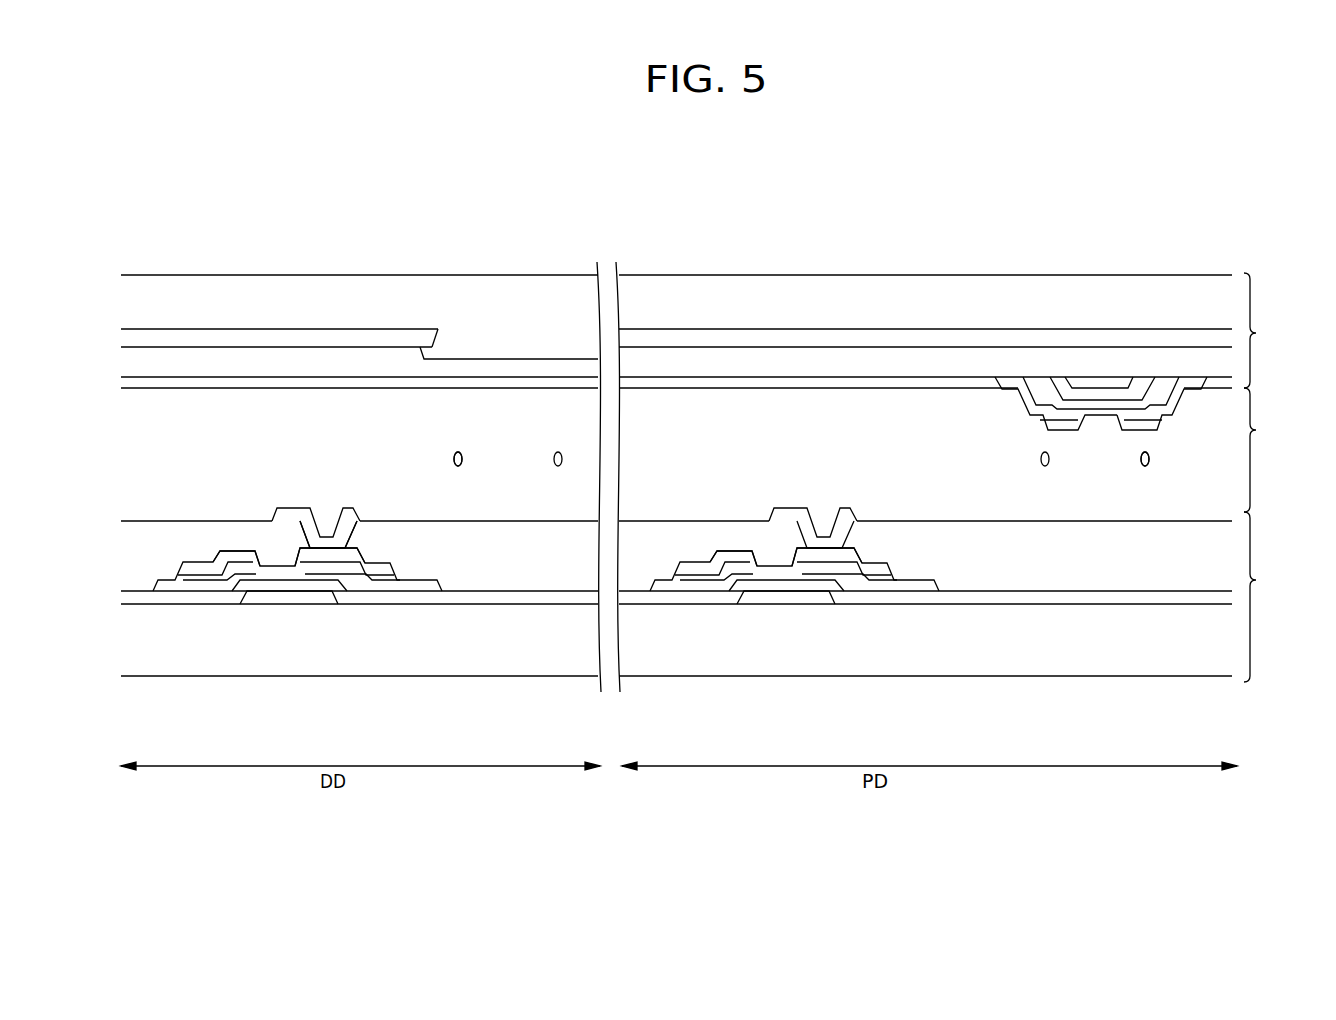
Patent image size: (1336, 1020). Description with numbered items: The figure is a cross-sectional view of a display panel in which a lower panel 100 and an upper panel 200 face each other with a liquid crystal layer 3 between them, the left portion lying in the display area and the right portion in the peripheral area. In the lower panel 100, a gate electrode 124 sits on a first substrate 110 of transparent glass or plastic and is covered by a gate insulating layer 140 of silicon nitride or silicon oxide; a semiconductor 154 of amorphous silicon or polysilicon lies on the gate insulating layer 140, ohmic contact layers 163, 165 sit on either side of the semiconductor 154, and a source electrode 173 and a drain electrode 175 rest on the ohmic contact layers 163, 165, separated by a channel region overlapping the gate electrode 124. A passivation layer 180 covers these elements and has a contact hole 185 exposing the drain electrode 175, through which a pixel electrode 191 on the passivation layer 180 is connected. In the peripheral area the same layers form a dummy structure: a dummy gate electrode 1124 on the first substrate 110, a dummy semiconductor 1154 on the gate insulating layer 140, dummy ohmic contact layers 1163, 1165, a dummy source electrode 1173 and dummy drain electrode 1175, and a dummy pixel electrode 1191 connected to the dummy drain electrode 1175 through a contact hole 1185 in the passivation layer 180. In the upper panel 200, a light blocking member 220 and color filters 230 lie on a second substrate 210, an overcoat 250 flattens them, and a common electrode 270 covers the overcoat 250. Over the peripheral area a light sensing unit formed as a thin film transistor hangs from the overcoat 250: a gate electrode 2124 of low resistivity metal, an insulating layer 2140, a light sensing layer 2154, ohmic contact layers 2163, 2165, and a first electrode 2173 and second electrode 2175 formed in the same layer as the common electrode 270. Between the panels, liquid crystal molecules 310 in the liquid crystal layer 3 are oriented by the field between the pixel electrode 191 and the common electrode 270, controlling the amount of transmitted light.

The liquid crystal layer 3 is at (867, 442).
The lower panel 100 is at (705, 622).
The first substrate 110 is at (340, 660).
The gate electrode 124 is at (286, 597).
The gate insulating layer 140 is at (512, 596).
The semiconductor 154 is at (228, 582).
The ohmic contact layer 163 is at (207, 575).
The ohmic contact layer 165 is at (388, 576).
The source electrode 173 is at (225, 553).
The drain electrode 175 is at (367, 567).
The passivation layer 180 is at (563, 570).
The contact hole 185 is at (318, 533).
The pixel electrode 191 is at (394, 520).
The upper panel 200 is at (705, 310).
The second substrate 210 is at (177, 290).
The light blocking member 220 is at (253, 347).
The color filter 230 is at (460, 340).
The overcoat 250 is at (330, 367).
The common electrode 270 is at (542, 382).
The liquid crystal molecule 310 is at (463, 459).
The dummy gate electrode 1124 is at (783, 597).
The dummy semiconductor 1154 is at (725, 582).
The dummy ohmic contact layer 1163 is at (704, 575).
The dummy ohmic contact layer 1165 is at (885, 576).
The dummy source electrode 1173 is at (722, 553).
The dummy drain electrode 1175 is at (864, 567).
The contact hole 1185 is at (815, 533).
The dummy pixel electrode 1191 is at (916, 520).
The gate electrode 2124 is at (1107, 384).
The insulating layer 2140 is at (1052, 388).
The light sensing layer 2154 is at (1152, 398).
The ohmic contact layer 2163 is at (1047, 398).
The ohmic contact layer 2165 is at (1156, 398).
The first electrode 2173 is at (1006, 382).
The second electrode 2175 is at (1190, 382).